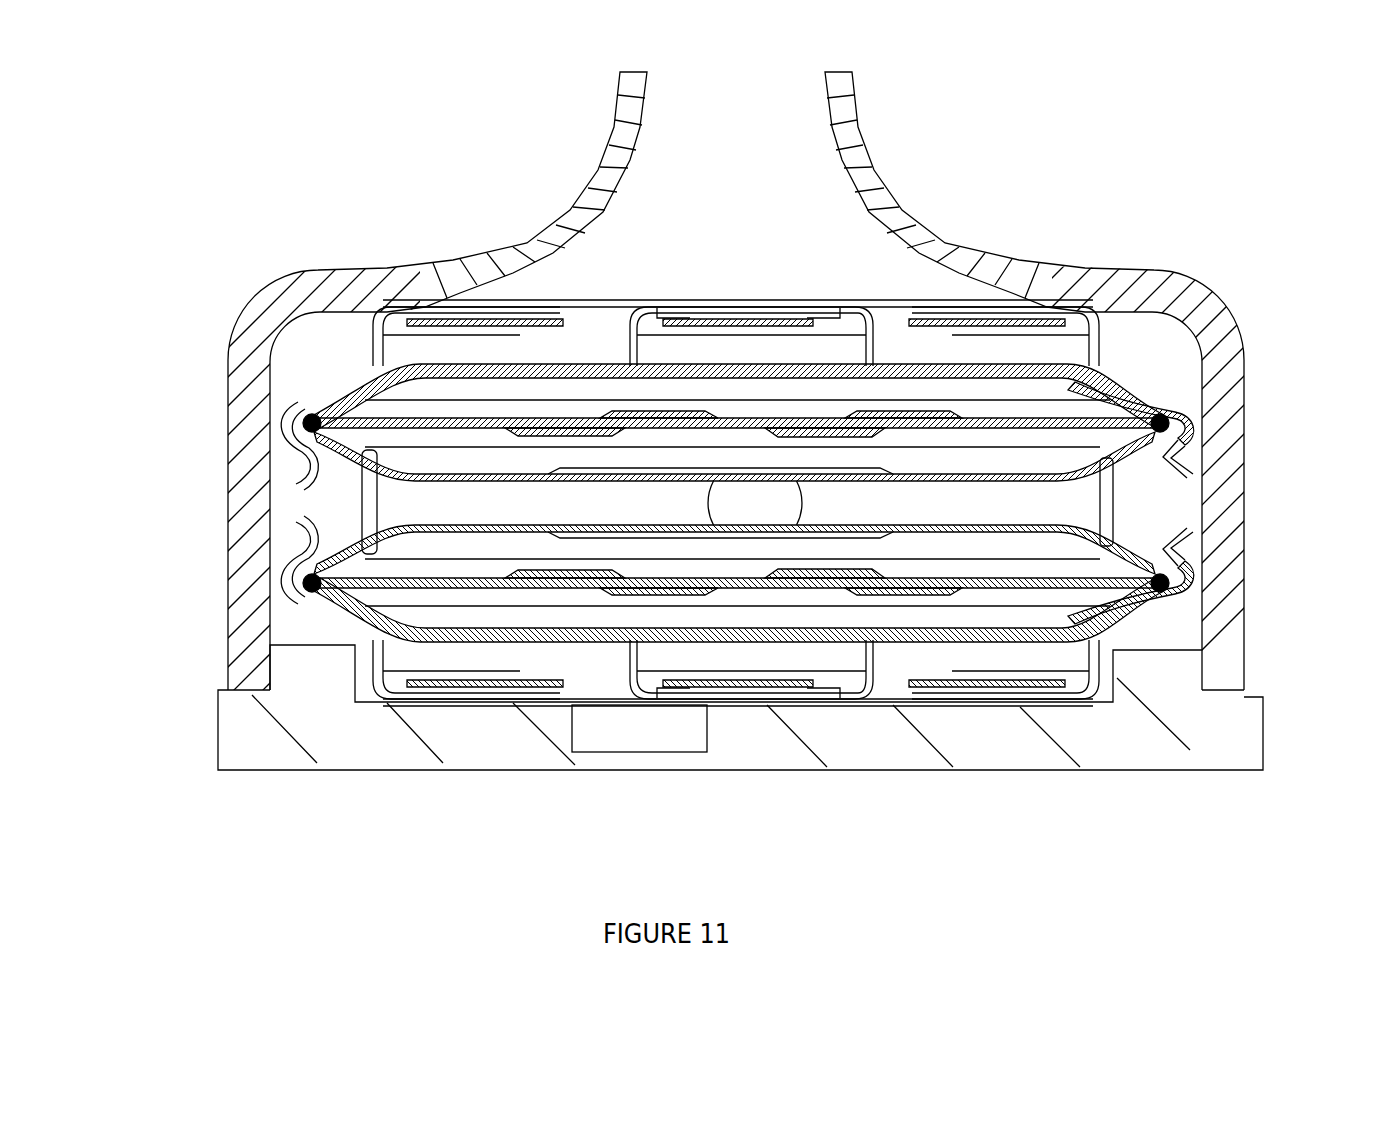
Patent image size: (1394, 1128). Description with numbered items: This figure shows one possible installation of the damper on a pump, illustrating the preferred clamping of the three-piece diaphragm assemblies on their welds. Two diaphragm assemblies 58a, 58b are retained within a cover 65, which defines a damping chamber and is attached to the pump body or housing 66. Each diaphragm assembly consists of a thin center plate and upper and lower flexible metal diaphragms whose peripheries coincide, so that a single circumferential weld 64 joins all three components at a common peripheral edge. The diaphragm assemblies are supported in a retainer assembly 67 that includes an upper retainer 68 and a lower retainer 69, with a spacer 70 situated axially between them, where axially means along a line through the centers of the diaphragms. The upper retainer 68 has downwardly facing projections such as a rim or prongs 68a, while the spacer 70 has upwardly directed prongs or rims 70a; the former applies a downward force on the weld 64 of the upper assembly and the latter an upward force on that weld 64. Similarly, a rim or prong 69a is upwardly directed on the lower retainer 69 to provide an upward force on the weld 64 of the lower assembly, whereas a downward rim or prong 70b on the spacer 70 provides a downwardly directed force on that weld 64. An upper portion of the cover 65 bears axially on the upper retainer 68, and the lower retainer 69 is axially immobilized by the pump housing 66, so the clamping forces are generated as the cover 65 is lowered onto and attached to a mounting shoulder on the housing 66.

The cover 65 is at (392, 267).
The pump body or housing 66 is at (910, 819).
The retainer assembly 67 is at (750, 298).
The upper retainer 68 is at (864, 305).
The lower retainer 69 is at (368, 650).
The diaphragm assembly 58a is at (951, 365).
The diaphragm assembly 58b is at (487, 640).
The weld 64 is at (1170, 422).
The rim or prongs 68a is at (1170, 410).
The rim or prong 69a is at (1175, 598).
The spacer 70 is at (1115, 528).
The prongs or rims 70a is at (1187, 433).
The rim or prong 70b is at (1187, 560).